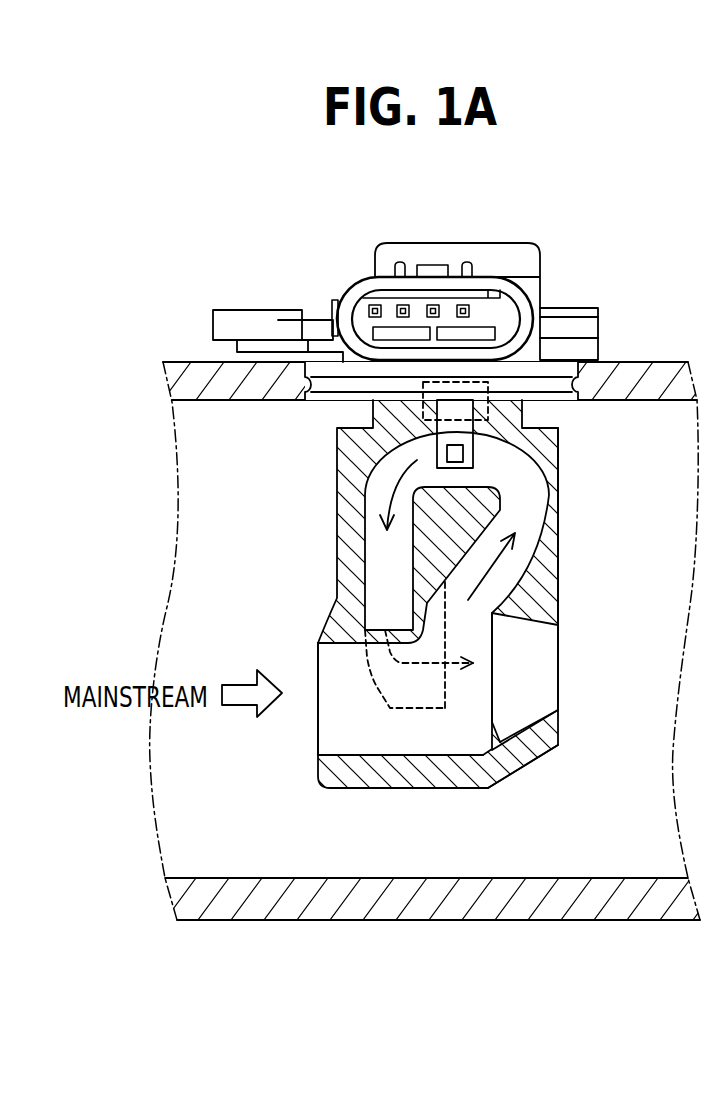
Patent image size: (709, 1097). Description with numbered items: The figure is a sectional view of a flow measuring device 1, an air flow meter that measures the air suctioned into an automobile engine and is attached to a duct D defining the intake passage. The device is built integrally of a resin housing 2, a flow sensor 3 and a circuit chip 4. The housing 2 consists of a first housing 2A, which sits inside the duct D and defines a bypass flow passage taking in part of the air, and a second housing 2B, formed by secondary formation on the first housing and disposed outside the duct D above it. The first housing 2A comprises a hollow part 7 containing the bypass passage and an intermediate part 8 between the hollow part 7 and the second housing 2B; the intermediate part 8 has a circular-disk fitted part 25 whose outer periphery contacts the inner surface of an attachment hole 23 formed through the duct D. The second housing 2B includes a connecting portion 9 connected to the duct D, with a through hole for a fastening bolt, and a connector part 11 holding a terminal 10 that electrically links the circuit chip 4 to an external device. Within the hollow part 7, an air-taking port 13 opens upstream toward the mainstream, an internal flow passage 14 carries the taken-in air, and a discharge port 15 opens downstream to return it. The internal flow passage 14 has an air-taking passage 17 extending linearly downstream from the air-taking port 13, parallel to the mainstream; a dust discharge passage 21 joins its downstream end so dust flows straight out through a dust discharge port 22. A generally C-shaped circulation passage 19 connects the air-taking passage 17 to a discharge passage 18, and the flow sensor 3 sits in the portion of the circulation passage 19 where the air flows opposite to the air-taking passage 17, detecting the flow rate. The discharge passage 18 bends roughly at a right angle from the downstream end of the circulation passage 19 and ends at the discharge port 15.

The flow measuring device 1 is at (437, 502).
The housing 2 is at (455, 528).
The first housing 2A is at (343, 503).
The second housing 2B is at (595, 308).
The flow sensor 3 is at (463, 454).
The circuit chip 4 is at (400, 403).
The hollow part 7 is at (550, 542).
The intermediate part 8 is at (483, 339).
The connecting portion 9 is at (240, 318).
The terminal 10 is at (463, 305).
The connector part 11 is at (363, 282).
The air-taking port 13 is at (318, 728).
The internal flow passage 14 is at (437, 638).
The discharge port 15 is at (450, 687).
The air-taking passage 17 is at (338, 668).
The discharge passage 18 is at (408, 690).
The circulation passage 19 is at (532, 502).
The dust discharge passage 21 is at (525, 707).
The dust discharge port 22 is at (562, 662).
The attachment hole 23 is at (573, 358).
The fitted part 25 is at (548, 370).
The duct D is at (183, 368).